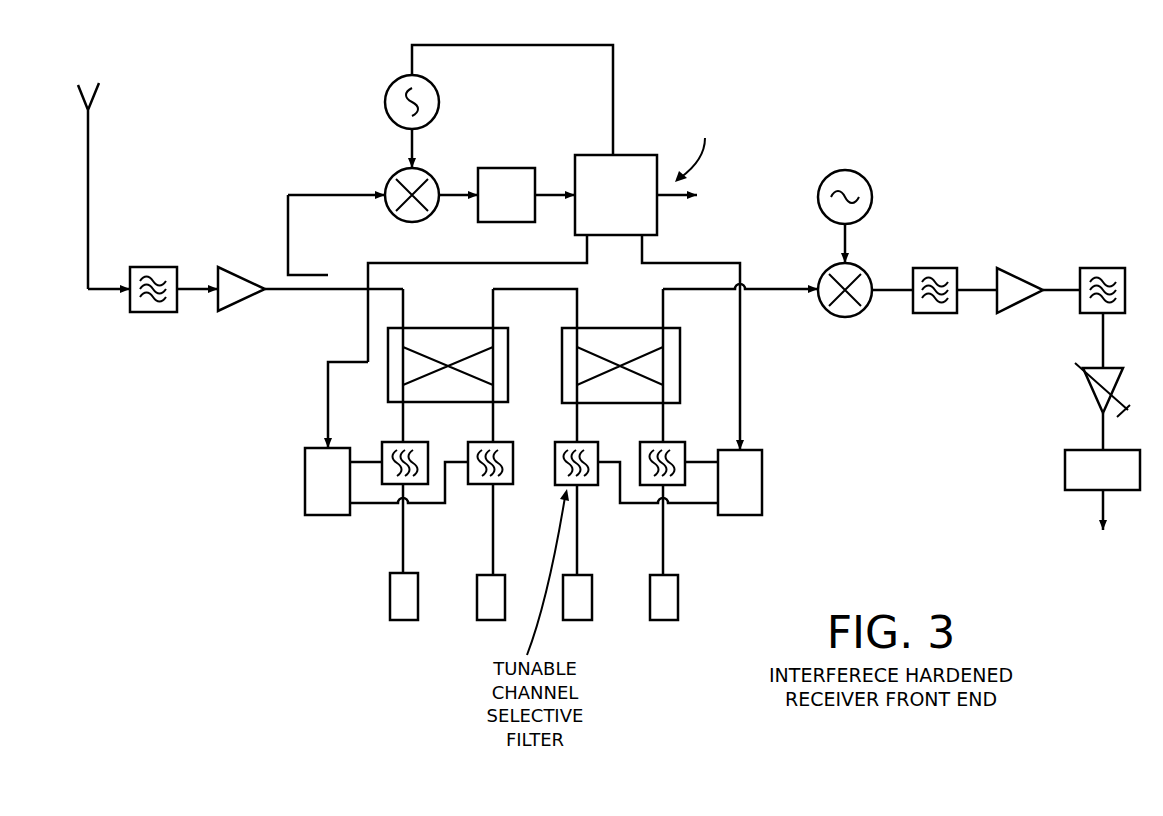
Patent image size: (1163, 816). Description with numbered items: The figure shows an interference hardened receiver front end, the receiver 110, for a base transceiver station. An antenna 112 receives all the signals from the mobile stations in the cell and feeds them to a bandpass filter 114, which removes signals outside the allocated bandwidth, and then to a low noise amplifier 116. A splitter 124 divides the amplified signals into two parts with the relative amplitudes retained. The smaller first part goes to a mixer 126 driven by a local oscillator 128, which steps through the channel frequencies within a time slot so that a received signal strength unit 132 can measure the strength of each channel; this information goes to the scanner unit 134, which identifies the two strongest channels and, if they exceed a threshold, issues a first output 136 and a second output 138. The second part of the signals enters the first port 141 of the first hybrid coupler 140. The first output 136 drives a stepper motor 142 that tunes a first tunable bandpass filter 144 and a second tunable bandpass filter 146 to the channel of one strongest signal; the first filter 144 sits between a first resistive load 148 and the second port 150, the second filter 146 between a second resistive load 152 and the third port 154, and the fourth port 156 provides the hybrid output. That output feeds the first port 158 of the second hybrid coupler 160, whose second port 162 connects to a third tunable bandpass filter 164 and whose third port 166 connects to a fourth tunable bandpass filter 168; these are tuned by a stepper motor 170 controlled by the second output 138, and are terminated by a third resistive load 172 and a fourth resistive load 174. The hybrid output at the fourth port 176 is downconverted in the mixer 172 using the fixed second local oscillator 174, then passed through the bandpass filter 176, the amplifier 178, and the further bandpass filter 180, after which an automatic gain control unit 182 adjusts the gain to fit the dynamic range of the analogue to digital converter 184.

The receiver 110 is at (866, 124).
The antenna 112 is at (89, 135).
The bandpass filter 114 is at (147, 264).
The low noise amplifier 116 is at (233, 268).
The splitter 124 is at (298, 270).
The mixer 126 is at (391, 177).
The local oscillator 128 is at (438, 96).
The received signal strength unit 132 is at (488, 232).
The scanner unit 134 is at (691, 148).
The first output 136 is at (584, 246).
The second output 138 is at (648, 250).
The first hybrid coupler 140 is at (388, 368).
The first port 141 is at (400, 305).
The stepper motor 142 is at (337, 480).
The first tunable bandpass filter 144 is at (423, 490).
The second tunable bandpass filter 146 is at (507, 490).
The first resistive load 148 is at (390, 585).
The second port 150 is at (402, 418).
The second resistive load 152 is at (477, 588).
The third port 154 is at (490, 418).
The fourth port 156 is at (488, 310).
The first port of second hybrid 158 is at (574, 312).
The second hybrid coupler 160 is at (682, 362).
The second port of second hybrid 162 is at (575, 418).
The third tunable bandpass filter 164 is at (595, 490).
The third port of second hybrid 166 is at (660, 418).
The fourth tunable bandpass filter 168 is at (688, 488).
The stepper motor 170 is at (728, 482).
The third resistive load / mixer 172 is at (592, 590).
The fourth resistive load / second local oscillator 174 is at (678, 590).
The fourth port / bandpass filter 176 is at (660, 310).
The amplifier 178 is at (1025, 305).
The further bandpass filter 180 is at (1100, 266).
The automatic gain control unit 182 is at (1082, 389).
The analogue to digital converter 184 is at (1065, 466).